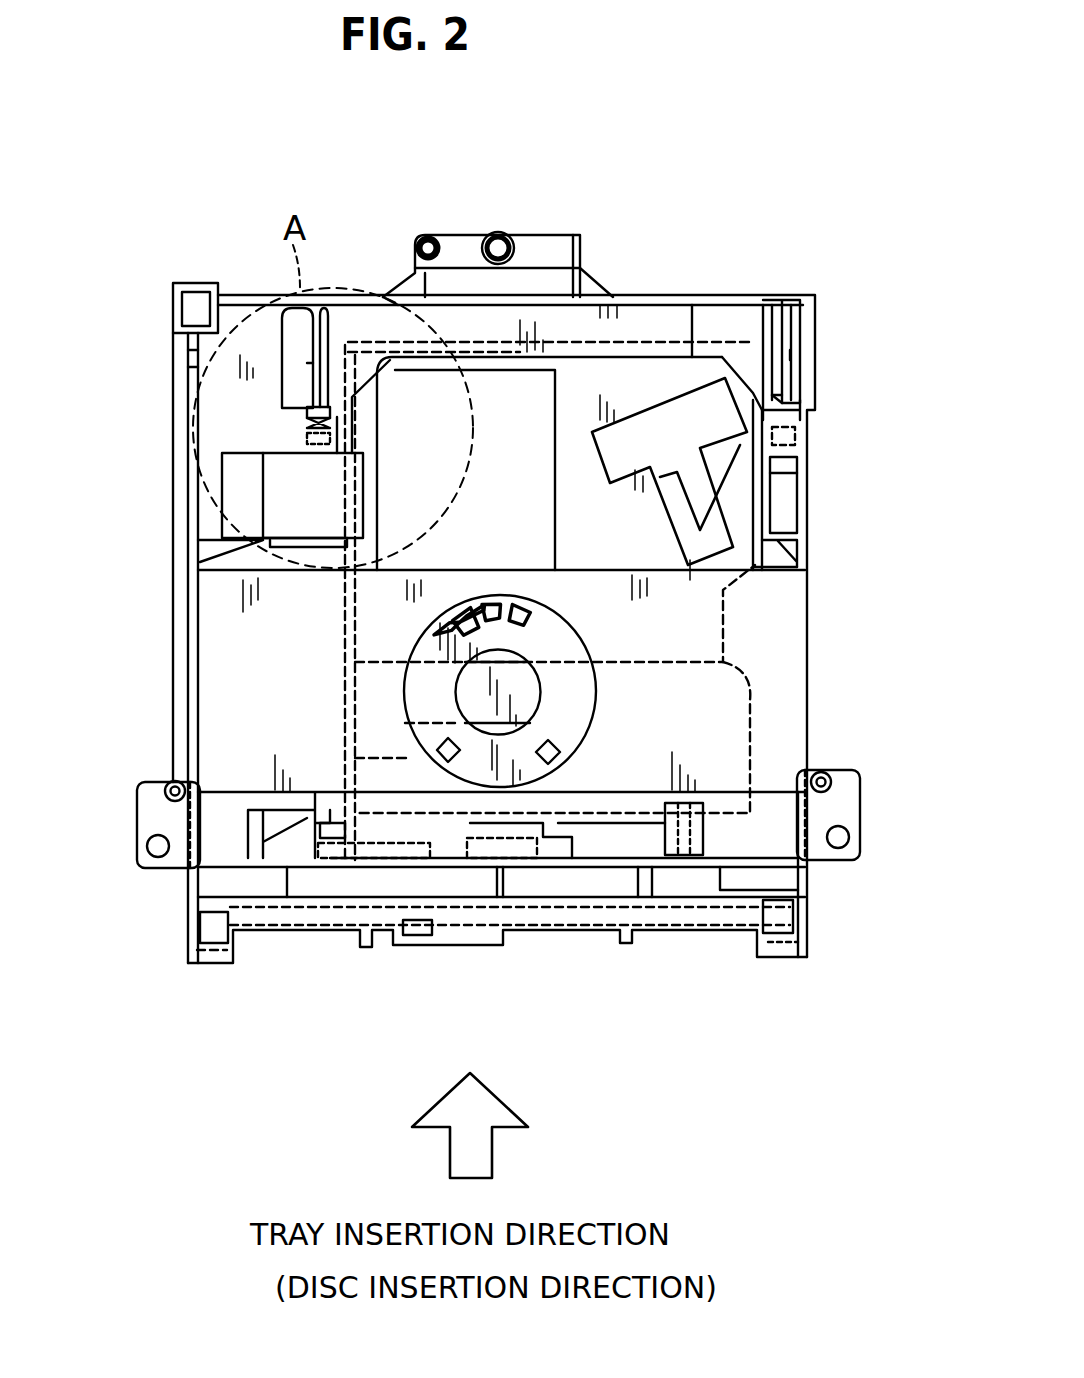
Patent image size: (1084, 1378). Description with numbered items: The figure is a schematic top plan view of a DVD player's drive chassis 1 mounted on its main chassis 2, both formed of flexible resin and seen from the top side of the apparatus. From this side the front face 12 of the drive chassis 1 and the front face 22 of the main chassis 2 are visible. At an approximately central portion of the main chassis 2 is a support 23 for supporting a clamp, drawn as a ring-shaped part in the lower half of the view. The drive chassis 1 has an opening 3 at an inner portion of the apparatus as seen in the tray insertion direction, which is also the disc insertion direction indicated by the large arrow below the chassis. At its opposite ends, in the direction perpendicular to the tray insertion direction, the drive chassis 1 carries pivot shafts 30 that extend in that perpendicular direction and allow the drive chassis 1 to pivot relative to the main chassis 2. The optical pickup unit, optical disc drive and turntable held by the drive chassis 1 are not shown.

The drive chassis 1 is at (656, 337).
The main chassis 2 is at (647, 287).
The opening 3 is at (513, 472).
The front face of the drive chassis 12 is at (400, 312).
The front face of the main chassis 22 is at (240, 417).
The support 23 is at (570, 710).
The pivot shafts 30 is at (330, 410).